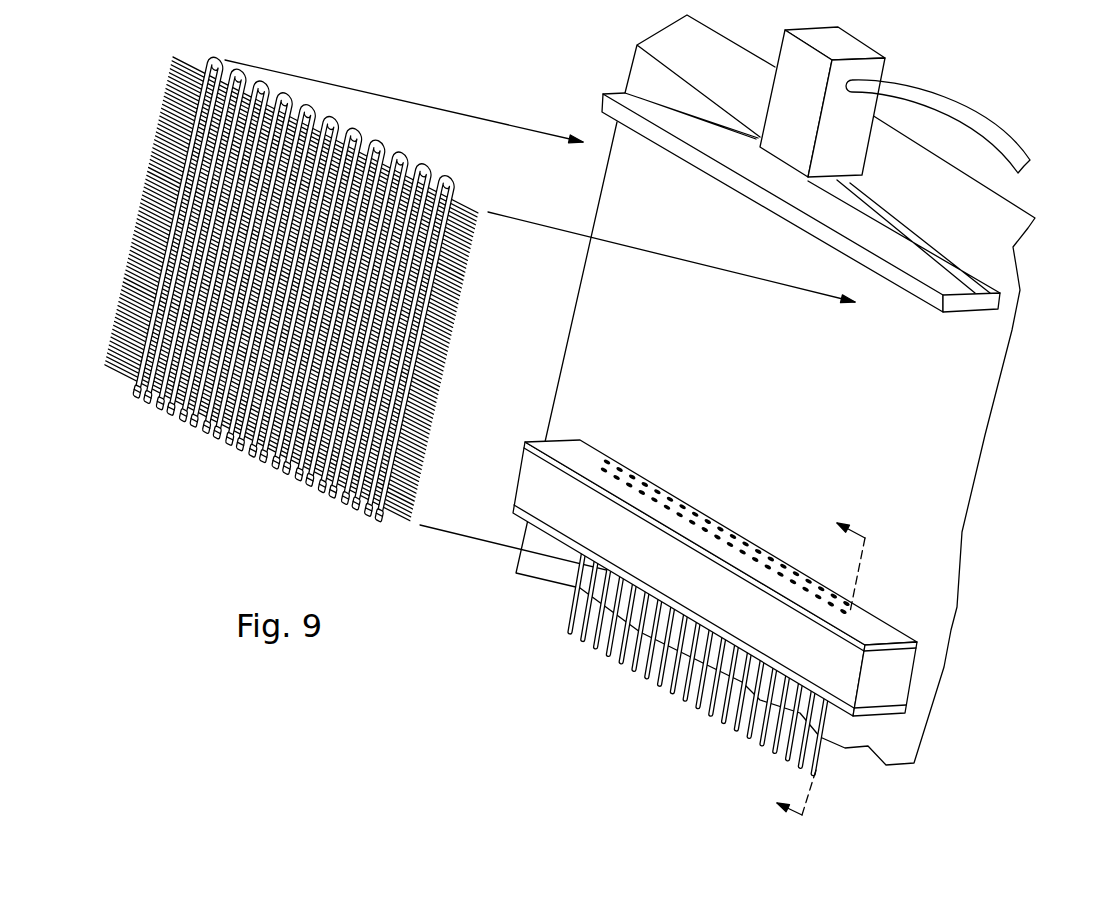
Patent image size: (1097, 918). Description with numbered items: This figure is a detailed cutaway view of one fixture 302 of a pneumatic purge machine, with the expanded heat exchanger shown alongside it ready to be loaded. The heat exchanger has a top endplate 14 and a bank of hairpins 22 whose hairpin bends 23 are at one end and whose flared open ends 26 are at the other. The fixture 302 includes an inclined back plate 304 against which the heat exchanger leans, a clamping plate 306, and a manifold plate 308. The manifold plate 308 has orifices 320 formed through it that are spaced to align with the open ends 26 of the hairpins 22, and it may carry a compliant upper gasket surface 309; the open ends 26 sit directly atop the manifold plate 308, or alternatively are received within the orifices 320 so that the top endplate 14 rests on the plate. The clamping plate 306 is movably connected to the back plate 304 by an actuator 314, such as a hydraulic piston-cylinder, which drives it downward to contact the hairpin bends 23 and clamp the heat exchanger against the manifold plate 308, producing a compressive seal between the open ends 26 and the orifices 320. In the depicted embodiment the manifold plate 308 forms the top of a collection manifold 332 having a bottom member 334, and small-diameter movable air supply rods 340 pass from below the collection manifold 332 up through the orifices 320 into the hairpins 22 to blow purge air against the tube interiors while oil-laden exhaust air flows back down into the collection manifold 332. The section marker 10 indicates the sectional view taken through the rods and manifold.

The heat exchanger top endplate 14 is at (118, 380).
The hairpins 22 is at (225, 445).
The hairpin bends 23 is at (376, 150).
The open ends 26 is at (275, 472).
The fixture 302 is at (782, 415).
The back plate 304 is at (949, 431).
The clamping plate 306 is at (1002, 302).
The manifold plate 308 is at (773, 591).
The compliant upper gasket surface 309 is at (872, 626).
The actuator 314 is at (887, 68).
The orifices 320 is at (697, 508).
The collection manifold 332 is at (916, 679).
The bottom member 334 is at (904, 712).
The air supply rods 340 is at (568, 617).
The section line FIG. 10 is at (798, 656).